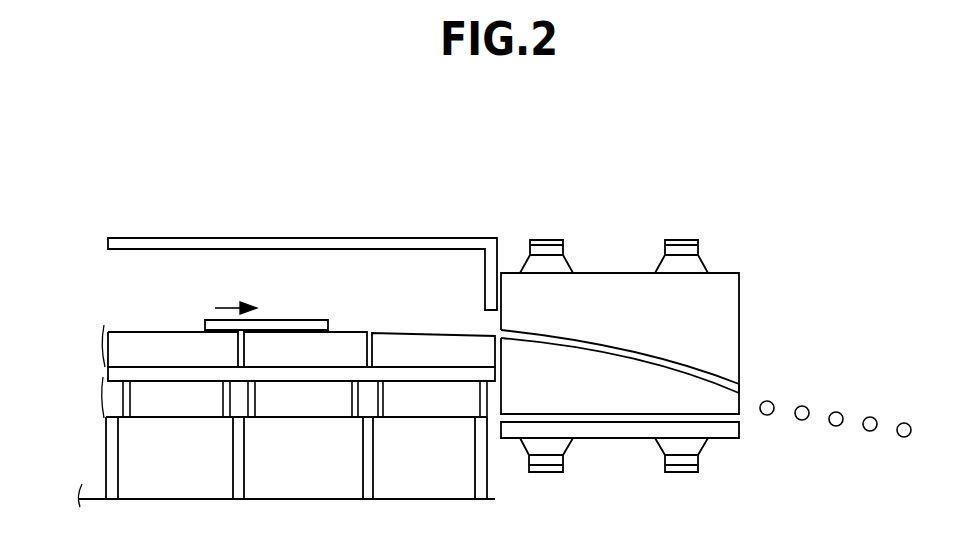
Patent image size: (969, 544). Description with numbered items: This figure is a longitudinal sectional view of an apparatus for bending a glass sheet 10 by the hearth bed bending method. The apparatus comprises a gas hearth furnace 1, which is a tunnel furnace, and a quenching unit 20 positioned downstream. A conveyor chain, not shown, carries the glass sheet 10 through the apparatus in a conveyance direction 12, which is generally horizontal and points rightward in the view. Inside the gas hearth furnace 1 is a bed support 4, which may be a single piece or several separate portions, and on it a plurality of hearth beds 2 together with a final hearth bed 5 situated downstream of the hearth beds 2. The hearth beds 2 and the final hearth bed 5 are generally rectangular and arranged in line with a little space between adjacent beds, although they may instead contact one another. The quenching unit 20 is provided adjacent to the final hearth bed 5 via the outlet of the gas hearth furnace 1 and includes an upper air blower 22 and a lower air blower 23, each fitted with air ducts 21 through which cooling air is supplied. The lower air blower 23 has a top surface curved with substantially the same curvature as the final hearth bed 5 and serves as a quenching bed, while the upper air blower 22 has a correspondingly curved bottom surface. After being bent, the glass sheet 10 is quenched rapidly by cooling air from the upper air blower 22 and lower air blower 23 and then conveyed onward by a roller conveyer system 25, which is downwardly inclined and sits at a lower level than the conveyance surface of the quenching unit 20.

The gas hearth furnace 1 is at (216, 227).
The hearth beds 2 is at (176, 348).
The bed support 4 is at (432, 373).
The final hearth bed 5 is at (407, 331).
The glass sheet 10 is at (291, 320).
The conveyance direction 12 is at (227, 307).
The quenching unit 20 is at (660, 324).
The air ducts 21 is at (566, 264).
The upper air blower 22 is at (728, 312).
The lower air blower 23 is at (731, 403).
The roller conveyer system 25 is at (840, 402).